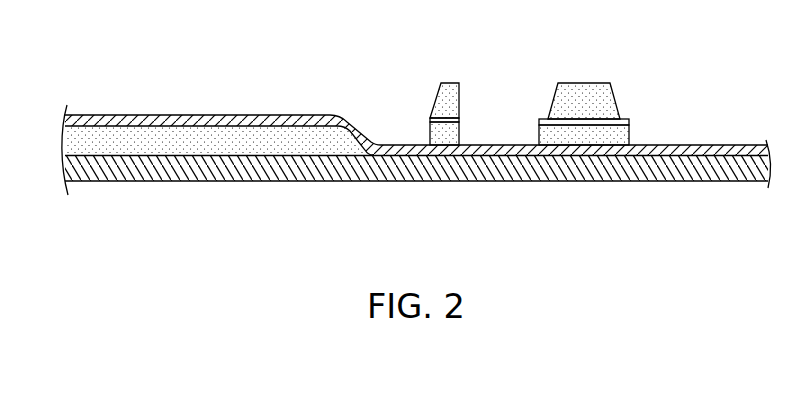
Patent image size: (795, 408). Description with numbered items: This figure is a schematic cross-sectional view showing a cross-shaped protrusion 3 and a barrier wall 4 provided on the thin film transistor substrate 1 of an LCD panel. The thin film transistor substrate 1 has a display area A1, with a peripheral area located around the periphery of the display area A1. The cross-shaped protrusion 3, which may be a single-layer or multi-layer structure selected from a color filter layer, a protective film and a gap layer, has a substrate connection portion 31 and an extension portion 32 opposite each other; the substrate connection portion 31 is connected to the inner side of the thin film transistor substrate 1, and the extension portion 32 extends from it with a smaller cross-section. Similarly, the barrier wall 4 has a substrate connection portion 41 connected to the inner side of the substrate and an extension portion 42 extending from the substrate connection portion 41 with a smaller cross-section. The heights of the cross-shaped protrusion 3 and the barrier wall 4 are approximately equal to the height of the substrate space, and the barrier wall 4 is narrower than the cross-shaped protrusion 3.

The thin film transistor substrate 1 is at (633, 172).
The display area A1 is at (212, 148).
The cross-shaped protrusion 3 is at (572, 143).
The substrate connection portion 31 is at (577, 138).
The extension portion 32 is at (553, 104).
The barrier wall 4 is at (442, 137).
The substrate connection portion 41 is at (445, 140).
The extension portion 42 is at (437, 98).